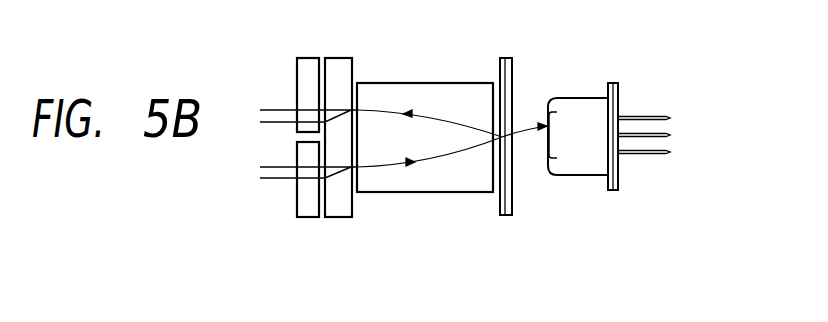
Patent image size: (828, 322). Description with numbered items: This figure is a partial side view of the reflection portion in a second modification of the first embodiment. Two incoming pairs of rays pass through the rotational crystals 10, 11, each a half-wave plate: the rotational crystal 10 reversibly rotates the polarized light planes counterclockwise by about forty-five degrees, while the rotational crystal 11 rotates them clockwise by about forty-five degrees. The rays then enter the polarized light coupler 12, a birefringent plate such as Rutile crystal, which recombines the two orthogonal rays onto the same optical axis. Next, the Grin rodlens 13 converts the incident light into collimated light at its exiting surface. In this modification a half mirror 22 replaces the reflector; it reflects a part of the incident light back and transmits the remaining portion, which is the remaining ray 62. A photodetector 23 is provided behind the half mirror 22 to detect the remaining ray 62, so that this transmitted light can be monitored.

The rotational crystal 10 is at (307, 218).
The rotational crystal 11 is at (310, 57).
The polarized light coupler 12 is at (340, 57).
The Grin rodlens 13 is at (465, 83).
The half mirror 22 is at (513, 75).
The photodetector 23 is at (590, 95).
The remaining ray 62 is at (528, 133).